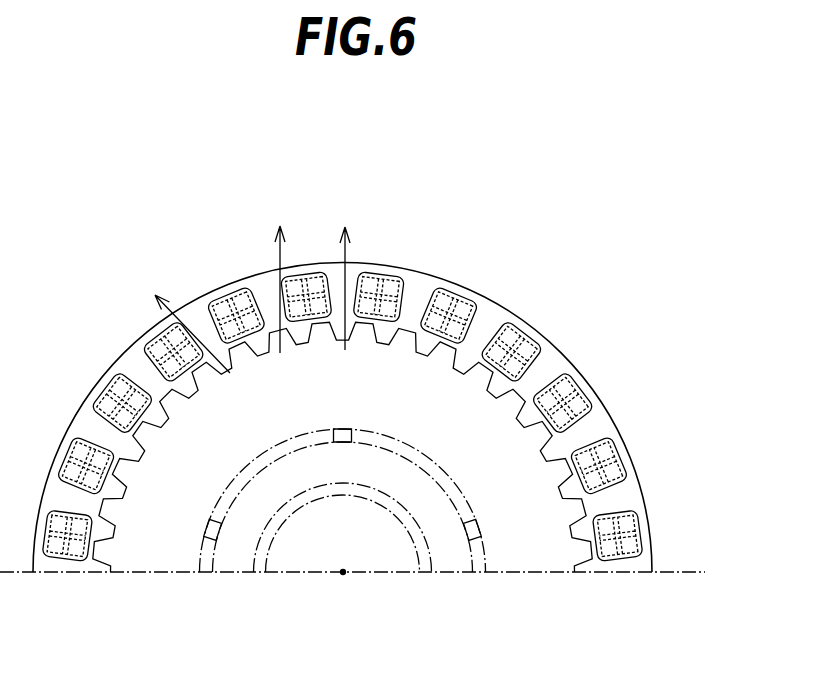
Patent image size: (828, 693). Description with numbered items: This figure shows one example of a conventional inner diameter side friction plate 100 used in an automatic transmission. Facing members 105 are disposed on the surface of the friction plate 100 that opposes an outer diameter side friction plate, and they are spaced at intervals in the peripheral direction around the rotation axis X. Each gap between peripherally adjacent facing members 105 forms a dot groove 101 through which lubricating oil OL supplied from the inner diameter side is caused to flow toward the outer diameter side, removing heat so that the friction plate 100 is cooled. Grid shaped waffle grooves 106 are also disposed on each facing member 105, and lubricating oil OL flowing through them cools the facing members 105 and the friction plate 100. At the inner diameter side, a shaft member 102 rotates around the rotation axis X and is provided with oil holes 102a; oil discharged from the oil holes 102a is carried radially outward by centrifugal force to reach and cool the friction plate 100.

The inner diameter side friction plate 100 is at (646, 270).
The dot groove 101 is at (276, 277).
The shaft member 102 is at (257, 463).
The oil hole 102a is at (348, 431).
The facing member 105 is at (298, 278).
The waffle groove 106 is at (157, 338).
The lubricating oil OL is at (258, 316).
The rotation axis X is at (343, 574).